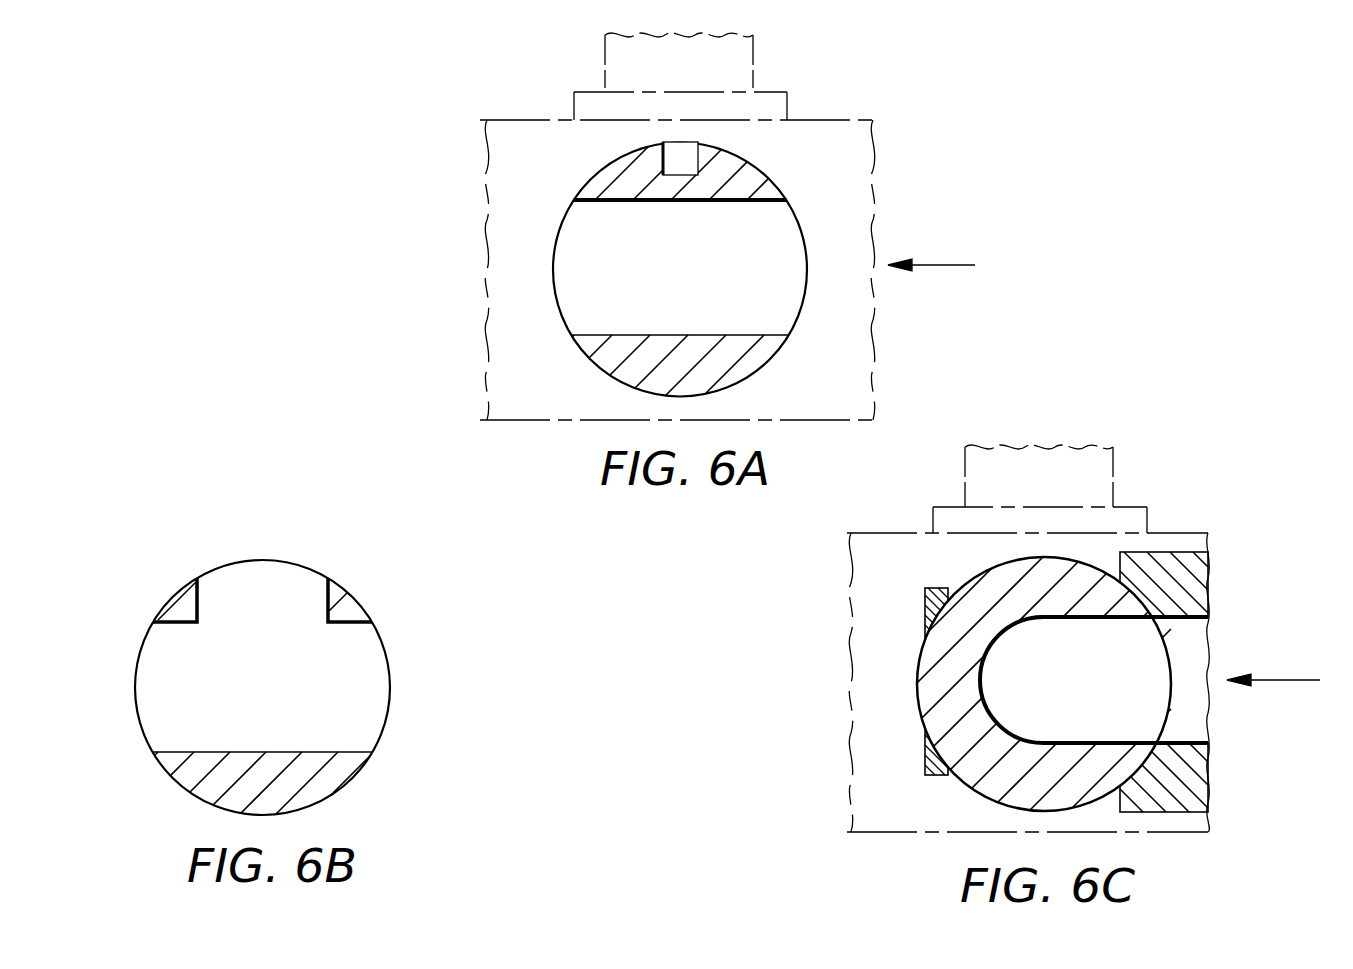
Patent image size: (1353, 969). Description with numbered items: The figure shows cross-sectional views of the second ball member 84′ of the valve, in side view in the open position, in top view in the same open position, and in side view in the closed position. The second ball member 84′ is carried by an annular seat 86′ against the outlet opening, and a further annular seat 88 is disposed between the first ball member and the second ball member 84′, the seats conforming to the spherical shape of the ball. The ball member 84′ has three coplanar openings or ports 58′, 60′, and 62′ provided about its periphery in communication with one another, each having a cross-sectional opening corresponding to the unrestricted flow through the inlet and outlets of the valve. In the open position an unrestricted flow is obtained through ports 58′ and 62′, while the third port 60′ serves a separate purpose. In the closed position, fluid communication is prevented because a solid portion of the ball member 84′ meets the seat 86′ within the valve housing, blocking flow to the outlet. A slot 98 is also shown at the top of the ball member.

In FIG. 6A, the first opening or port 58′ is at (793, 257).
In FIG. 6B, the first opening or port 58′ is at (368, 683).
In FIG. 6A, the third opening or port 62′ is at (578, 270).
In FIG. 6B, the third opening or port 62′ is at (168, 680).
In FIG. 6A, the second ball member 84′ is at (610, 363).
In FIG. 6C, the second ball member 84′ is at (932, 693).
In FIG. 6A, the slot 98 is at (688, 152).
In FIG. 6B, the second opening or port 60′ is at (258, 578).
In FIG. 6C, the second opening or port 60′ is at (1165, 678).
In FIG. 6C, the annular seat 86′ is at (925, 598).
In FIG. 6C, the annular seat 88 is at (1187, 572).